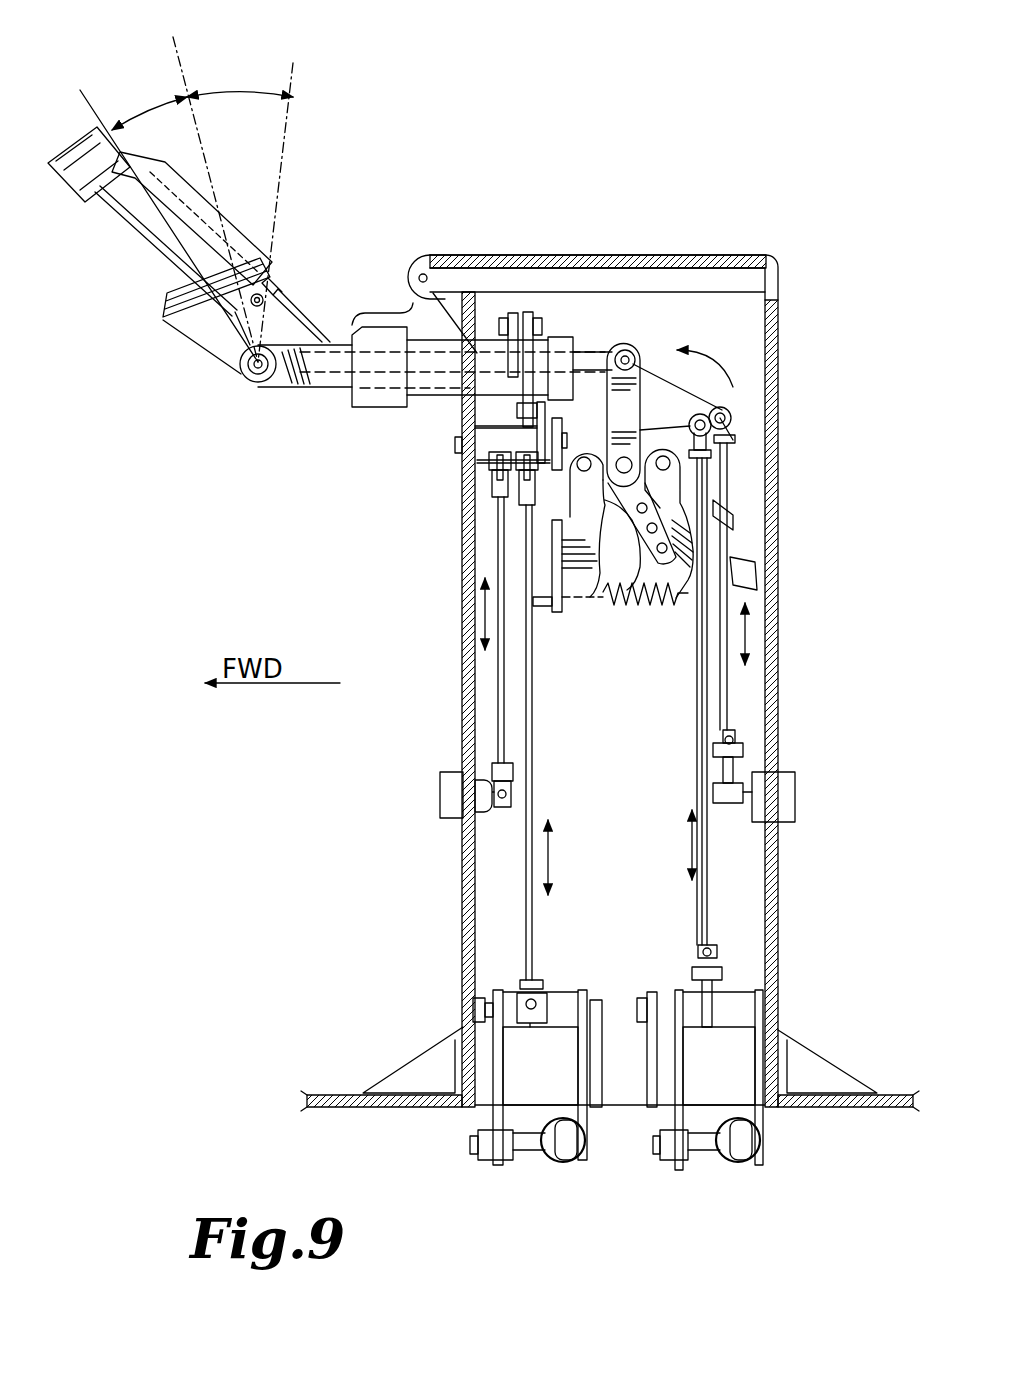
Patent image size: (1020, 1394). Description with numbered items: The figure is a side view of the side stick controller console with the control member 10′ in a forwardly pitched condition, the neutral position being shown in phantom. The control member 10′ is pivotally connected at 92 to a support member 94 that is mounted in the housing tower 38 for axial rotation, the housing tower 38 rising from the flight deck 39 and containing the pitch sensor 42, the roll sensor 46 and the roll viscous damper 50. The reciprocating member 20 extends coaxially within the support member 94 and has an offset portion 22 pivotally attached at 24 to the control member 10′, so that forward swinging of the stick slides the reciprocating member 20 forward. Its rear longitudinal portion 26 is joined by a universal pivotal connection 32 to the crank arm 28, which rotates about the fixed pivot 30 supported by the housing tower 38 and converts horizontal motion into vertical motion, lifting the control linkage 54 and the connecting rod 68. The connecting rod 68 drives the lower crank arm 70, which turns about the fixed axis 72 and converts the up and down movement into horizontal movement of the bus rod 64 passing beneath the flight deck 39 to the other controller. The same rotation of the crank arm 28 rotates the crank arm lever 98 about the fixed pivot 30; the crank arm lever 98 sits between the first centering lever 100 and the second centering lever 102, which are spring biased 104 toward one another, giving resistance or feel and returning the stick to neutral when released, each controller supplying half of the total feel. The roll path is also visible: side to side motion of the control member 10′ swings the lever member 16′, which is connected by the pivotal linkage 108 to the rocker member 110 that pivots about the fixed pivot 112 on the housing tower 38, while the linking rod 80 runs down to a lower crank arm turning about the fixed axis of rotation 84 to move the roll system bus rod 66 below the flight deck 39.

The control member 10′ is at (150, 233).
The pivotal attachment 24 is at (270, 295).
The offset portion 22 is at (288, 327).
The reciprocating member 20 is at (378, 372).
The lever member 16′ is at (510, 312).
The rear longitudinal portion 26 is at (588, 358).
The universal pivotal connection 32 is at (632, 352).
The crank arm 28 is at (657, 387).
The fixed pivot 30 is at (647, 418).
The pivotal connection 92 is at (250, 387).
The support member 94 is at (287, 390).
The pivotal linkage 108 is at (522, 385).
The fixed pivot 112 is at (455, 445).
The rocker member 110 is at (493, 453).
The first centering lever 100 is at (677, 502).
The housing tower 38 is at (462, 570).
The second centering lever 102 is at (573, 592).
The spring bias 104 is at (653, 600).
The crank arm lever 98 is at (633, 612).
The roll viscous damper 50 is at (500, 675).
The control linkage 54 is at (723, 700).
The roll sensor 46 is at (453, 773).
The pitch sensor 42 is at (787, 777).
The linking rod 80 is at (527, 887).
The fixed axis of rotation 84 is at (595, 1000).
The fixed axis 72 is at (647, 1000).
The connecting rod 68 is at (703, 917).
The flight deck 39 is at (343, 1097).
The lower crank arm 70 is at (777, 1032).
The roll system bus rod 66 is at (557, 1166).
The bus rod 64 is at (733, 1166).